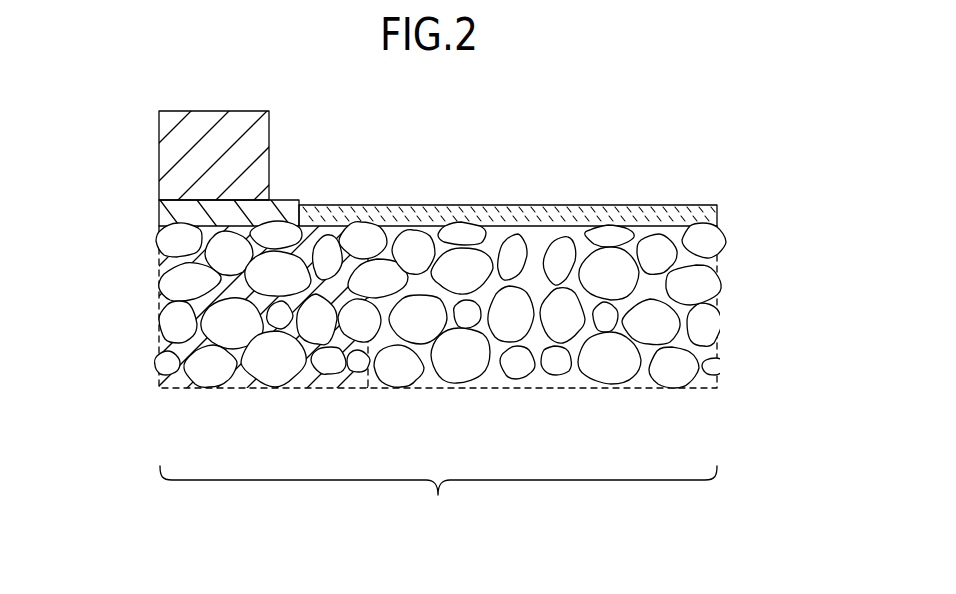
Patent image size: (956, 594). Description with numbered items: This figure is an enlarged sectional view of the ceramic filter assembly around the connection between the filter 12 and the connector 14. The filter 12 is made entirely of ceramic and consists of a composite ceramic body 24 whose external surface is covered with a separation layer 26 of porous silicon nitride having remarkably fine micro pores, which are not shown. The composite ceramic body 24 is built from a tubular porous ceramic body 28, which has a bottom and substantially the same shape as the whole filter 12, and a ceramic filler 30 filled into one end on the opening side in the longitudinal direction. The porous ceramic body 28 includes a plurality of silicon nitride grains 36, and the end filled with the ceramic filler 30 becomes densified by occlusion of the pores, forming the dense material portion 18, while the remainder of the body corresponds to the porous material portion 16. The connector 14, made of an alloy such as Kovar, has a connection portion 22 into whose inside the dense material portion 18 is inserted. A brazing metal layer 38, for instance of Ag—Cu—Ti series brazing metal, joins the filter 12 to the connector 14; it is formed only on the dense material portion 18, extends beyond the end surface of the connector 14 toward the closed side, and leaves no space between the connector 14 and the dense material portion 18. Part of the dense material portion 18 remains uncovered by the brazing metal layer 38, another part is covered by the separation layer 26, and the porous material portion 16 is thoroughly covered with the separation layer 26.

The filter 12 is at (645, 157).
The connector 14 is at (235, 125).
The connection portion 22 is at (222, 155).
The brazing metal layer 38 is at (285, 212).
The separation layer 26 is at (516, 215).
The composite ceramic body 24 is at (783, 277).
The dense material portion 18 is at (160, 412).
The porous material portion 16 is at (368, 412).
The silicon nitride grain 36 is at (720, 237).
The porous ceramic body 28 is at (728, 293).
The ceramic filler 30 is at (159, 345).